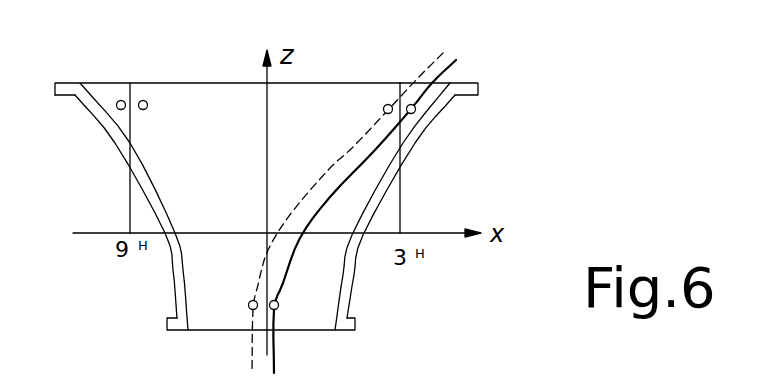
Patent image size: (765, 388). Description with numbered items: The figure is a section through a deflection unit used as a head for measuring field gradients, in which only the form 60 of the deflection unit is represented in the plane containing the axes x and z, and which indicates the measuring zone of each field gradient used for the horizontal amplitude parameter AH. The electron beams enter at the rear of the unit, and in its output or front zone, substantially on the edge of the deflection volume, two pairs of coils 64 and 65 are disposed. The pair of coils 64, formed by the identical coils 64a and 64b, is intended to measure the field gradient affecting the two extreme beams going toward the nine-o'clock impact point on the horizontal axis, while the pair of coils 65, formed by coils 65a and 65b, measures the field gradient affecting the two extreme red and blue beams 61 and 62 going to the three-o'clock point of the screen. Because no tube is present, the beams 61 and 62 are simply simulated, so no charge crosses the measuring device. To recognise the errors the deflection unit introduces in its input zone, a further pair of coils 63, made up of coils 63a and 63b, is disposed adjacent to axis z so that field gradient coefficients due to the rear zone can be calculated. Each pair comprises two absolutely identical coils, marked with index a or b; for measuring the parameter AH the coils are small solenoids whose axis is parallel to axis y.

The form of the deflection unit 60 is at (440, 110).
The red beam 61 is at (443, 54).
The blue beam 62 is at (458, 62).
The pair of coils 63 is at (257, 338).
The coil 63a is at (230, 306).
The coil 63b is at (301, 306).
The pair of coils 64 is at (158, 97).
The coil 64a is at (121, 100).
The coil 64b is at (148, 104).
The pair of coils 65 is at (367, 83).
The coil 65a is at (384, 105).
The coil 65b is at (369, 108).